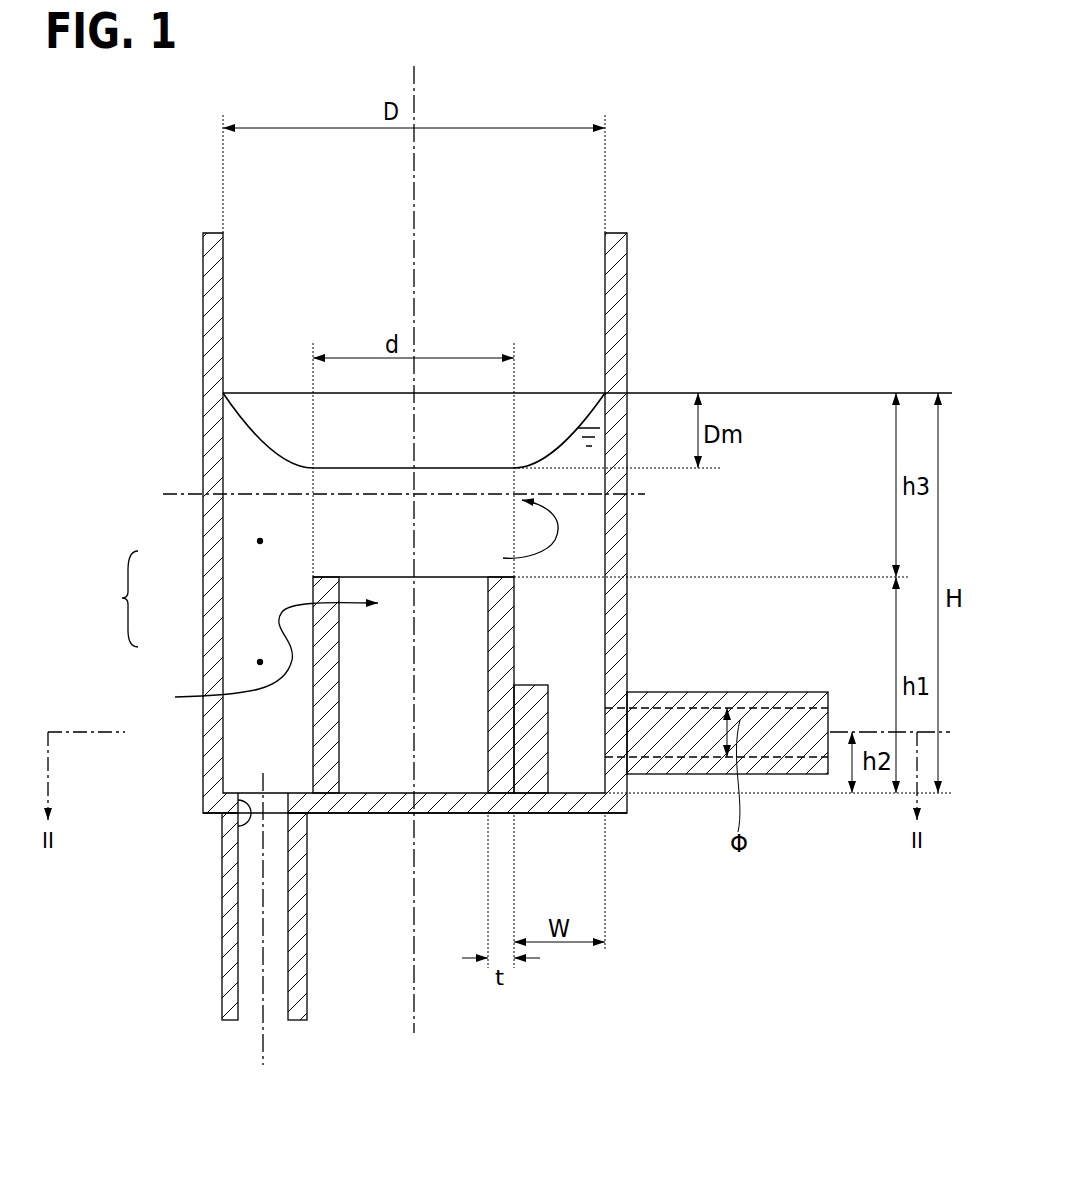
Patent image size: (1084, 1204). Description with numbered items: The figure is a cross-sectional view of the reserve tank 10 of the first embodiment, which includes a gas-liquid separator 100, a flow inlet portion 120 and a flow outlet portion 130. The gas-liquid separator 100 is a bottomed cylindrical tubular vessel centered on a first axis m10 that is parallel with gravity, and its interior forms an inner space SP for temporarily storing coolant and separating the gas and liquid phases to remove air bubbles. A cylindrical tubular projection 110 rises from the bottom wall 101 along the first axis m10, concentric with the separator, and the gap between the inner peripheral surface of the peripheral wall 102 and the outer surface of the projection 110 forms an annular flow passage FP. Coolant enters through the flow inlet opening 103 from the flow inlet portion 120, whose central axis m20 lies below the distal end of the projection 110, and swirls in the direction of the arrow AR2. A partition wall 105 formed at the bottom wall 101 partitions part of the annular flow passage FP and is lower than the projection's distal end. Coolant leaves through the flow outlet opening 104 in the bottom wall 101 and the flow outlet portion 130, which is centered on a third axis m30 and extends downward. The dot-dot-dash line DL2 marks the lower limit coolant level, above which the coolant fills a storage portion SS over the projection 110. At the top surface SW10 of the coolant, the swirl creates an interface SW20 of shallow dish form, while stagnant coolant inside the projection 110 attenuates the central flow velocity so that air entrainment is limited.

The reserve tank 10 is at (697, 181).
The gas-liquid separator 100 is at (628, 291).
The bottom wall 101 is at (547, 815).
The peripheral wall 102 is at (628, 552).
The flow inlet opening 103 is at (640, 712).
The flow outlet opening 104 is at (240, 826).
The partition wall 105 is at (538, 682).
The projection 110 is at (308, 712).
The flow inlet portion 120 is at (776, 690).
The flow outlet portion 130 is at (221, 980).
The top surface of the coolant SW10 is at (272, 393).
The interface of the swirling flow SW20 is at (265, 432).
The dot-dot-dash line DL2 is at (165, 494).
The storage portion SS is at (260, 541).
The annular flow passage FP is at (260, 662).
The inner space SP is at (115, 599).
The arrow AR2 is at (680, 515).
The first axis m10 is at (416, 80).
The central axis of the flow inlet portion m20 is at (845, 732).
The third axis m30 is at (265, 1047).